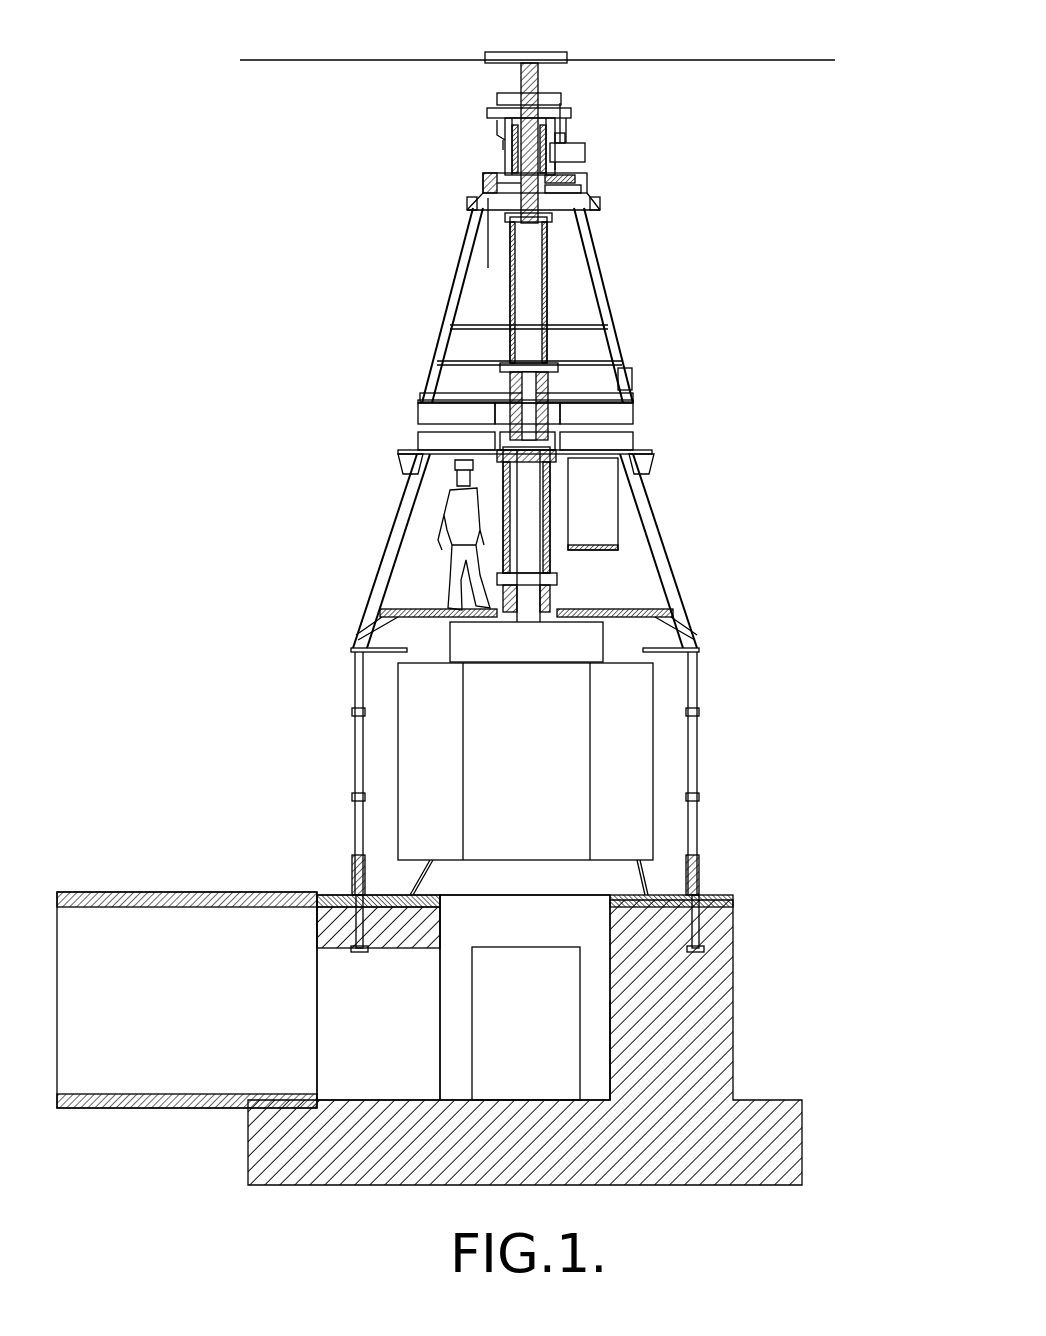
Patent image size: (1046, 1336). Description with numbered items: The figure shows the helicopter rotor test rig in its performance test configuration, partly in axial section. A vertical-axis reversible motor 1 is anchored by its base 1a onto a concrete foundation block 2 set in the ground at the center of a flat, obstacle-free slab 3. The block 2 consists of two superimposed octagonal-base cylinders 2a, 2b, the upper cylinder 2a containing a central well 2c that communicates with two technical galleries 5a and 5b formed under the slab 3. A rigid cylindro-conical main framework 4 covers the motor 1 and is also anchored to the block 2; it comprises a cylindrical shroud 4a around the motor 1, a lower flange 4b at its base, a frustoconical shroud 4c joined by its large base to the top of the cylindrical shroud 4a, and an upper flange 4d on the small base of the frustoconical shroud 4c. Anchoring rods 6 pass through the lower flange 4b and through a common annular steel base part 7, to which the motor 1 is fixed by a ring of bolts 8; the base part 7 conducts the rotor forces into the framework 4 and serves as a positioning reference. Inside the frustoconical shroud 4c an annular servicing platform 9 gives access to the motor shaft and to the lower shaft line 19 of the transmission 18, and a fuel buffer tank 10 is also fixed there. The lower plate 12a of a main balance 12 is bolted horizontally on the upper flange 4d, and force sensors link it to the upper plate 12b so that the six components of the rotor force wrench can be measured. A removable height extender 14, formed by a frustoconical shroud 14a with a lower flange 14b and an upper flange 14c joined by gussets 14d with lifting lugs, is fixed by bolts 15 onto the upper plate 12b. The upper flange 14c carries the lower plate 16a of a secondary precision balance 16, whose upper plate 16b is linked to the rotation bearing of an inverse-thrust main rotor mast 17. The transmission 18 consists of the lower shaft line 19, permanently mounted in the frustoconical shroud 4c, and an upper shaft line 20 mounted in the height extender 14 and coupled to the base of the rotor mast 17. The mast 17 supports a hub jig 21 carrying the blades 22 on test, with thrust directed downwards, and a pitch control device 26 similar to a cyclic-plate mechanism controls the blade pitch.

The reversible motor 1 is at (648, 745).
The base 1a is at (485, 905).
The foundation block 2 is at (563, 1066).
The upper cylinder 2a is at (563, 1040).
The lower cylinder 2b is at (785, 1140).
The central well 2c is at (592, 1080).
The slab 3 is at (202, 892).
The main framework 4 is at (556, 674).
The cylindrical shroud 4a is at (698, 782).
The lower flange 4b is at (697, 898).
The frustoconical shroud 4c is at (400, 548).
The upper flange 4d is at (650, 465).
The technical gallery 5a is at (382, 1021).
The technical gallery 5b is at (542, 1021).
The anchoring rods 6 is at (700, 934).
The base part 7 is at (378, 895).
The bolts 8 is at (412, 893).
The servicing platform 9 is at (650, 612).
The buffer tank 10 is at (608, 510).
The main balance 12 is at (534, 431).
The lower plate 12a is at (636, 442).
The upper plate 12b is at (636, 416).
The height extender 14 is at (603, 262).
The frustoconical shroud 14a is at (626, 375).
The lower flange 14b is at (634, 396).
The upper flange 14c is at (482, 215).
The gussets 14d is at (468, 198).
The bolts 15 is at (420, 401).
The secondary precision balance 16 is at (475, 170).
The lower plate 16a is at (583, 191).
The upper plate 16b is at (577, 178).
The main rotor mast 17 is at (462, 125).
The transmission 18 is at (497, 393).
The lower shaft line 19 is at (500, 490).
The upper shaft line 20 is at (550, 320).
The hub jig 21 is at (552, 55).
The blades 22 is at (730, 59).
The pitch control device 26 is at (570, 130).